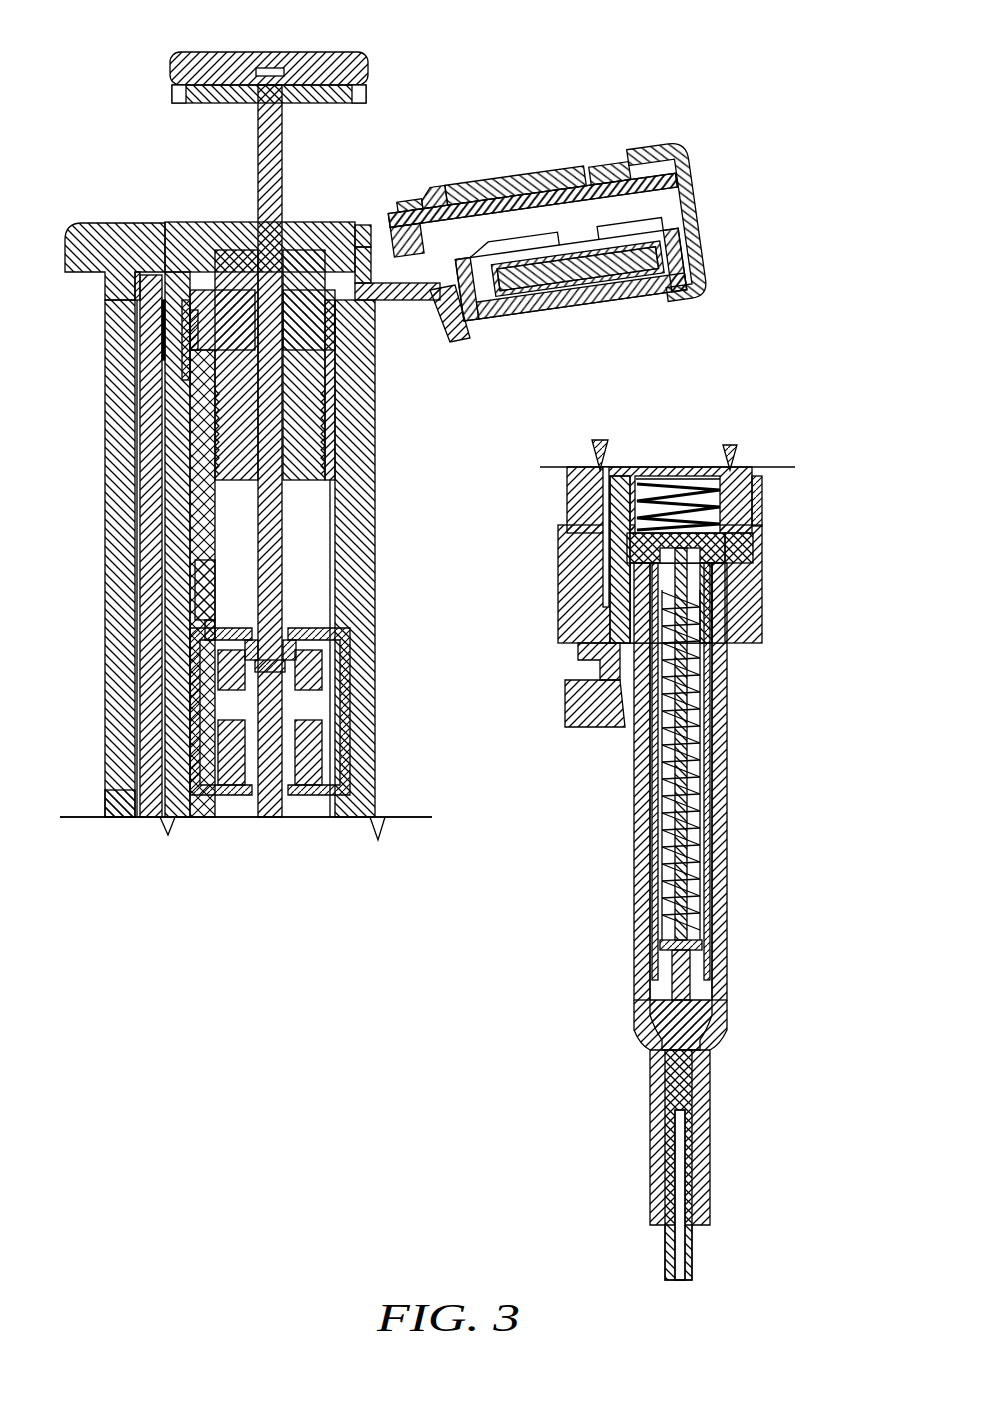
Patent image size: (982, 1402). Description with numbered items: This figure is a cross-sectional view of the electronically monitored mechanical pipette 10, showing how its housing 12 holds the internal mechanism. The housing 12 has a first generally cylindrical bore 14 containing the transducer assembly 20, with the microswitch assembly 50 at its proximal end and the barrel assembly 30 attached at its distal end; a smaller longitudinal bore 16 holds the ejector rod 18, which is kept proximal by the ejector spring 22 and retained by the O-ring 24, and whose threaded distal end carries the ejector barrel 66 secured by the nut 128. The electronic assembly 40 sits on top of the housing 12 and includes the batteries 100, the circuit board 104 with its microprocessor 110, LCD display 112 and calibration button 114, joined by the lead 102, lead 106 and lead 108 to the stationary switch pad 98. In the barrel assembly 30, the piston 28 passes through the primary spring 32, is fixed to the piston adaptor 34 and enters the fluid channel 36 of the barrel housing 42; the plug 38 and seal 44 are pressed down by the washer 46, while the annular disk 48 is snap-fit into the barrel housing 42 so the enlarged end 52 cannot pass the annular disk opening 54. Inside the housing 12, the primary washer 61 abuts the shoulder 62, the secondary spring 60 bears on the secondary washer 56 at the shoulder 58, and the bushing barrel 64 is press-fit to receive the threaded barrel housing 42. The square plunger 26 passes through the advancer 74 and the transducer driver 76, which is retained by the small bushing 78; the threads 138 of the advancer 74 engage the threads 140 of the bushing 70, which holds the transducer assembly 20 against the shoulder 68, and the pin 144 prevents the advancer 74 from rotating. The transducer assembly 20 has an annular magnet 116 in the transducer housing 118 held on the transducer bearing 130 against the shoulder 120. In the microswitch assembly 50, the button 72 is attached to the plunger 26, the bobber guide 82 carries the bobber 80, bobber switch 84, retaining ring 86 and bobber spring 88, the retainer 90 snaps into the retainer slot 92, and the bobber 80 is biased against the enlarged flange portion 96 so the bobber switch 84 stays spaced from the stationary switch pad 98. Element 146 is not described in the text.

The electronically monitored mechanical pipette 10 is at (388, 572).
The housing 12 is at (370, 605).
The first generally cylindrical bore 14 is at (330, 640).
The smaller longitudinal bore 16 is at (165, 585).
The ejector rod 18 is at (140, 510).
The transducer assembly 20 is at (320, 718).
The ejector spring 22 is at (135, 370).
The O-ring 24 is at (590, 605).
The plunger 26 is at (262, 140).
The piston 28 is at (705, 790).
The barrel assembly 30 is at (640, 895).
The primary spring 32 is at (722, 700).
The piston adaptor 34 is at (690, 470).
The fluid channel 36 is at (685, 1270).
The plug 38 is at (700, 1010).
The electronic assembly 40 is at (500, 162).
The barrel housing 42 is at (640, 815).
The seal 44 is at (655, 1020).
The washer 46 is at (690, 950).
The annular disk 48 is at (725, 545).
The microswitch assembly 50 is at (243, 215).
The enlarged end 52 is at (735, 590).
The annular disk opening 54 is at (565, 480).
The secondary washer 56 is at (760, 520).
The shoulder 58 is at (610, 495).
The secondary spring 60 is at (600, 470).
The primary washer 61 is at (650, 475).
The shoulder 62 is at (760, 480).
The bushing barrel 64 is at (600, 520).
The ejector barrel 66 is at (668, 1130).
The shoulder 68 is at (130, 780).
The bushing 70 is at (360, 440).
The button 72 is at (172, 62).
The advancer 74 is at (365, 470).
The transducer driver 76 is at (300, 580).
The small bushing 78 is at (310, 660).
The bobber 80 is at (330, 225).
The bobber guide 82 is at (215, 225).
The bobber switch 84 is at (390, 330).
The retaining ring 86 is at (150, 300).
The bobber spring 88 is at (165, 315).
The retainer 90 is at (145, 400).
The retainer slot 92 is at (370, 410).
The enlarged flange portion 96 is at (170, 225).
The stationary switch pad 98 is at (440, 300).
The batteries 100 is at (550, 330).
The lead 102 is at (470, 330).
The circuit board 104 is at (650, 175).
The lead 106 is at (690, 175).
The lead 108 is at (400, 200).
The microprocessor 110 is at (590, 185).
The LCD display 112 is at (535, 185).
The calibration button 114 is at (445, 185).
The annular magnet 116 is at (330, 690).
The transducer housing 118 is at (350, 750).
The shoulder 120 is at (200, 640).
The nut 128 is at (575, 710).
The transducer bearing 130 is at (225, 690).
The threads 138 is at (340, 500).
The threads 140 is at (345, 525).
The pin 144 is at (165, 430).
The retainer 146 is at (130, 280).